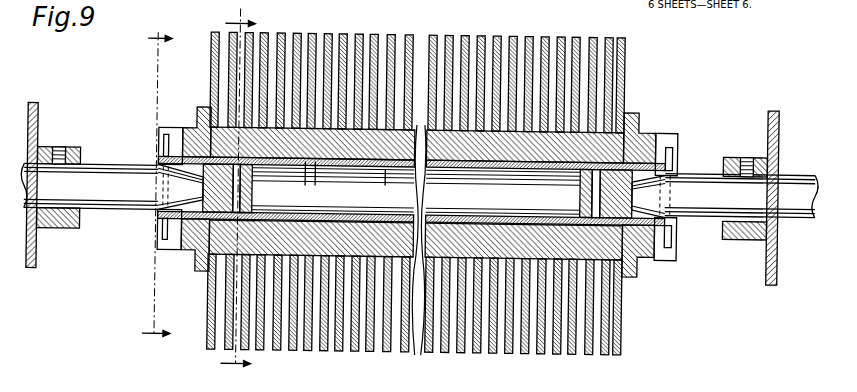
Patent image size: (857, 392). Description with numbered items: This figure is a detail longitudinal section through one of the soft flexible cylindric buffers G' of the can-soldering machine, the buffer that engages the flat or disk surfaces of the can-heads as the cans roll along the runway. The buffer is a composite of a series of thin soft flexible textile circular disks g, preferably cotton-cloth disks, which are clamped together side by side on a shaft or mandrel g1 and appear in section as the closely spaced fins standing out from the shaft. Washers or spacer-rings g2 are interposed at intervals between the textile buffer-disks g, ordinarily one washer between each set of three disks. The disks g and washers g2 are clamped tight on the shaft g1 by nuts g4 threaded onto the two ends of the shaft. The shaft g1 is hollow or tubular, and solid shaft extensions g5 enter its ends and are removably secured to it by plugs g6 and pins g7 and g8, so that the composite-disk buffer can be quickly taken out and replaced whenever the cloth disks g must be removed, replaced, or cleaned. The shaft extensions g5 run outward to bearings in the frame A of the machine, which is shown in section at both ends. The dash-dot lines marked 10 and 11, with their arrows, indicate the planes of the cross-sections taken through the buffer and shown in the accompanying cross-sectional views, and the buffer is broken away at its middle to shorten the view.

The buffer-disks g is at (217, 36).
The shaft or mandrel g1 is at (412, 180).
The washers or spacer-rings g2 is at (305, 168).
The nuts g4 is at (182, 258).
The solid shaft extensions g5 is at (115, 208).
The plugs g6 is at (580, 214).
The pins g7 is at (238, 195).
The pins g8 is at (163, 241).
The frame A is at (38, 129).
The section line 10 10 is at (158, 173).
The section line 11 11 is at (237, 183).
The cylindric buffer G' is at (415, 200).